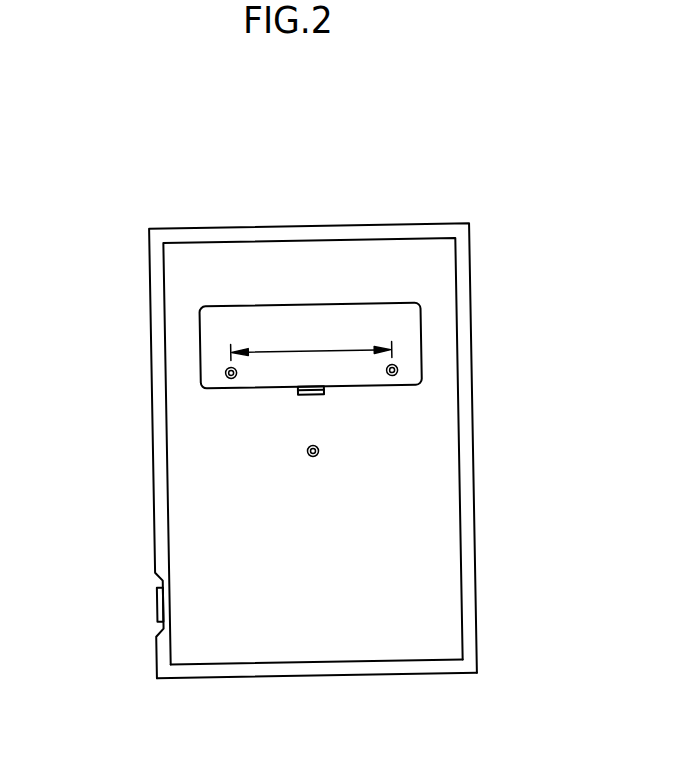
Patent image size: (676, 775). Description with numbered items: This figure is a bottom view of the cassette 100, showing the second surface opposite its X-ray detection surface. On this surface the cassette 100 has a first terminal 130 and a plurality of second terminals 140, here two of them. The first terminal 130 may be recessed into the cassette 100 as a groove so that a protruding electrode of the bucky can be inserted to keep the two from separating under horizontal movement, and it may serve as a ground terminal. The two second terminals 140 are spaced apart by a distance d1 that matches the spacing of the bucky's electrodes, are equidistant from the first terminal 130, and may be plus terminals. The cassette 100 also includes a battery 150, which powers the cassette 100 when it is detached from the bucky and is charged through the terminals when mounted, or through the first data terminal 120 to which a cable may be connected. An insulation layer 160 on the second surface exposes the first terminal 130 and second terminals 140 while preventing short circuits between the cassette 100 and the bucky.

The cassette 100 is at (450, 140).
The first data terminal 120 is at (156, 603).
The first terminal 130 is at (307, 450).
The second terminals 140 is at (390, 377).
The battery 150 is at (417, 347).
The insulation layer 160 is at (318, 661).